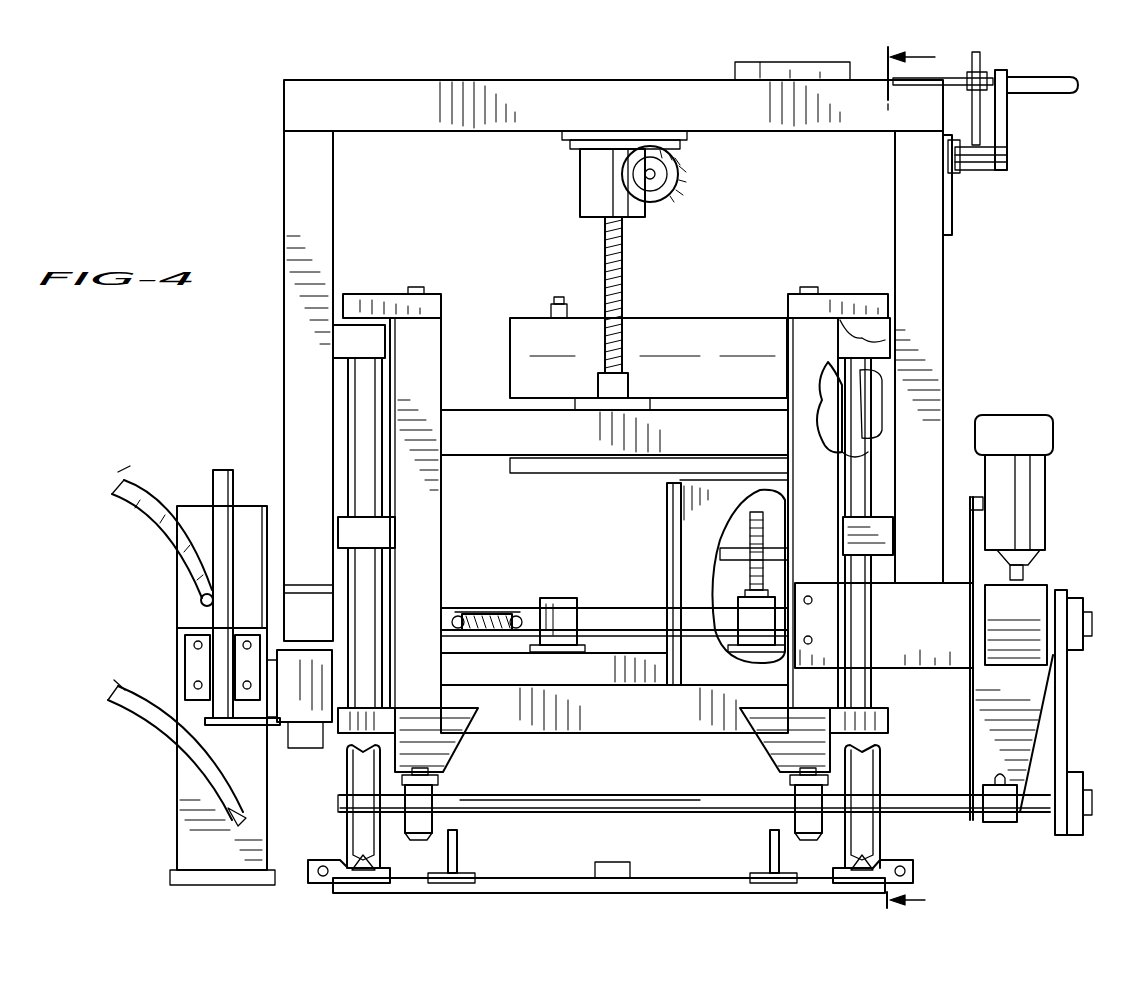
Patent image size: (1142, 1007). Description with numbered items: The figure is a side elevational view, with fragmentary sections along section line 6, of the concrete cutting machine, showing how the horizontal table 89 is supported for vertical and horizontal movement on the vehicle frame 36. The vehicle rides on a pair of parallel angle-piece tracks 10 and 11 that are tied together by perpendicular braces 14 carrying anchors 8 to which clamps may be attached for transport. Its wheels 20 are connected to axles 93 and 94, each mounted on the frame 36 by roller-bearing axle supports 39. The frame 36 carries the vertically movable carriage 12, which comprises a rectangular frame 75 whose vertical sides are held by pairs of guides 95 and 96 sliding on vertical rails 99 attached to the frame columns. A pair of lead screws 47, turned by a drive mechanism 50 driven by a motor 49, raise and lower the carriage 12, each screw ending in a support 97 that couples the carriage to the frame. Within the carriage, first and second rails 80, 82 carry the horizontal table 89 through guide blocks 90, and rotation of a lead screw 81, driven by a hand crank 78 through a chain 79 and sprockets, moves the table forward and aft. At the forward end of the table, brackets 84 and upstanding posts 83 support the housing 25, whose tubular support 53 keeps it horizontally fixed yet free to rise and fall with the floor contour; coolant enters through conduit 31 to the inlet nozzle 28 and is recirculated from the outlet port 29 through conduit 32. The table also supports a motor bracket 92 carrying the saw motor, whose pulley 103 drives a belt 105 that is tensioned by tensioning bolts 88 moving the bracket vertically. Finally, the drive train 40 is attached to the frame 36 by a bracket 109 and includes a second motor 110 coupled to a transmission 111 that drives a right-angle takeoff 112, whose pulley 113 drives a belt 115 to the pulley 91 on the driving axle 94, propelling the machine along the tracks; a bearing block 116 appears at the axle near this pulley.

The section line 6- 6 is at (920, 479).
The anchor 8 is at (460, 850).
The track 10 is at (372, 868).
The track 11 is at (848, 866).
The vertically movable carriage 12 is at (440, 137).
The perpendicular brace 14 is at (537, 878).
The wheel 20 is at (347, 770).
The housing 25 is at (253, 505).
The second inlet nozzle 28 is at (203, 602).
The outlet port 29 is at (237, 822).
The conduit 31 is at (142, 500).
The conduit 32 is at (152, 725).
The vehicle frame 36 is at (452, 526).
The axle support 39 is at (463, 749).
The drive train 40 is at (1098, 622).
The lead screw 47 is at (625, 262).
The motor 49 is at (687, 178).
The drive mechanism 50 is at (580, 183).
The tubular support 53 is at (224, 468).
The rectangular frame 75 is at (290, 272).
The hand crank 78 is at (1068, 78).
The chain 79 is at (955, 224).
The first rail 80 is at (503, 610).
The lead screw 81 is at (478, 610).
The second rail 82 is at (626, 608).
The upstanding post 83 is at (217, 700).
The bracket 84 is at (262, 738).
The tensioning bolt 88 is at (750, 572).
The horizontal table 89 is at (563, 683).
The guide block 90 is at (563, 598).
The pulley 91 is at (1065, 772).
The motor bracket 92 is at (667, 528).
The axle 93 is at (640, 795).
The driving axle 94 is at (928, 805).
The guide 95 is at (370, 354).
The guide 96 is at (340, 552).
The support 97 is at (630, 385).
The vertical rail 99 is at (720, 354).
The pulley 103 is at (890, 352).
The belt 105 is at (868, 452).
The bracket 109 is at (962, 632).
The second motor 110 is at (1030, 490).
The transmission 111 is at (1055, 440).
The 90° takeoff 112 is at (1035, 610).
The pulley 113 is at (1065, 590).
The belt 115 is at (1062, 705).
The bearing block 116 is at (1000, 822).